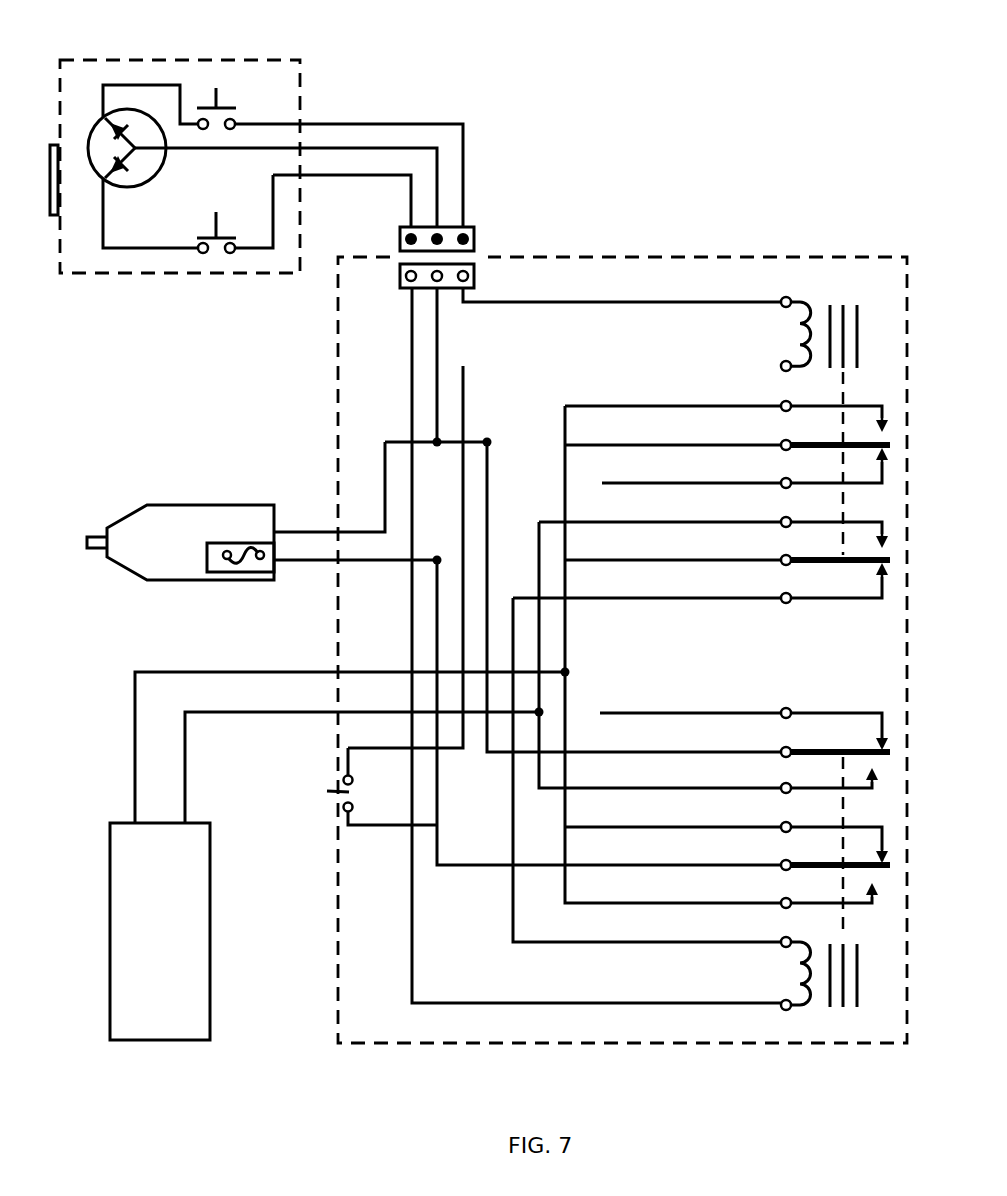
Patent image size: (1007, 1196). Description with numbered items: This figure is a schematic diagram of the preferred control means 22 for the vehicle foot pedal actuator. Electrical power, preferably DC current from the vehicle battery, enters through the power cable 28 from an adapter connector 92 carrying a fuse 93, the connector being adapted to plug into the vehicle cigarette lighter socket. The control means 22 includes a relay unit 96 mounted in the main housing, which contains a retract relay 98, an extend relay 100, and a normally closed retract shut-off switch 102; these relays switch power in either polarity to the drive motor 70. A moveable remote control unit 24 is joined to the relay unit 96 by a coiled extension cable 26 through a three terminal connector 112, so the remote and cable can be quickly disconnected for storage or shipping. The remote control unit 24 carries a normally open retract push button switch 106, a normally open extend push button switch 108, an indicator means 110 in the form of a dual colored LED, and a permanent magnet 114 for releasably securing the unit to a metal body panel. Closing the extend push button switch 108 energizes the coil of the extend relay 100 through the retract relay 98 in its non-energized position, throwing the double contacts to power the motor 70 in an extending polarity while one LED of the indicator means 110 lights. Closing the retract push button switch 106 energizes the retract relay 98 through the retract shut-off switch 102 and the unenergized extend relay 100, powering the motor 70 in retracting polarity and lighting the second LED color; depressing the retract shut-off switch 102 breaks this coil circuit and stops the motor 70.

The control means 22 is at (614, 184).
The remote control unit 24 is at (265, 59).
The extension cable 26 is at (398, 117).
The power cable 28 is at (320, 530).
The drive motor 70 is at (169, 1042).
The adapter connector 92 is at (188, 504).
The fuse 93 is at (243, 574).
The relay unit 96 is at (699, 256).
The retract relay 98 is at (848, 293).
The extend relay 100 is at (837, 1025).
The retract shut-off switch 102 is at (332, 799).
The retract push button switch 106 is at (216, 97).
The extend push button switch 108 is at (200, 258).
The indicator means 110 is at (87, 139).
The three terminal connector 112 is at (476, 236).
The permanent magnet 114 is at (50, 206).